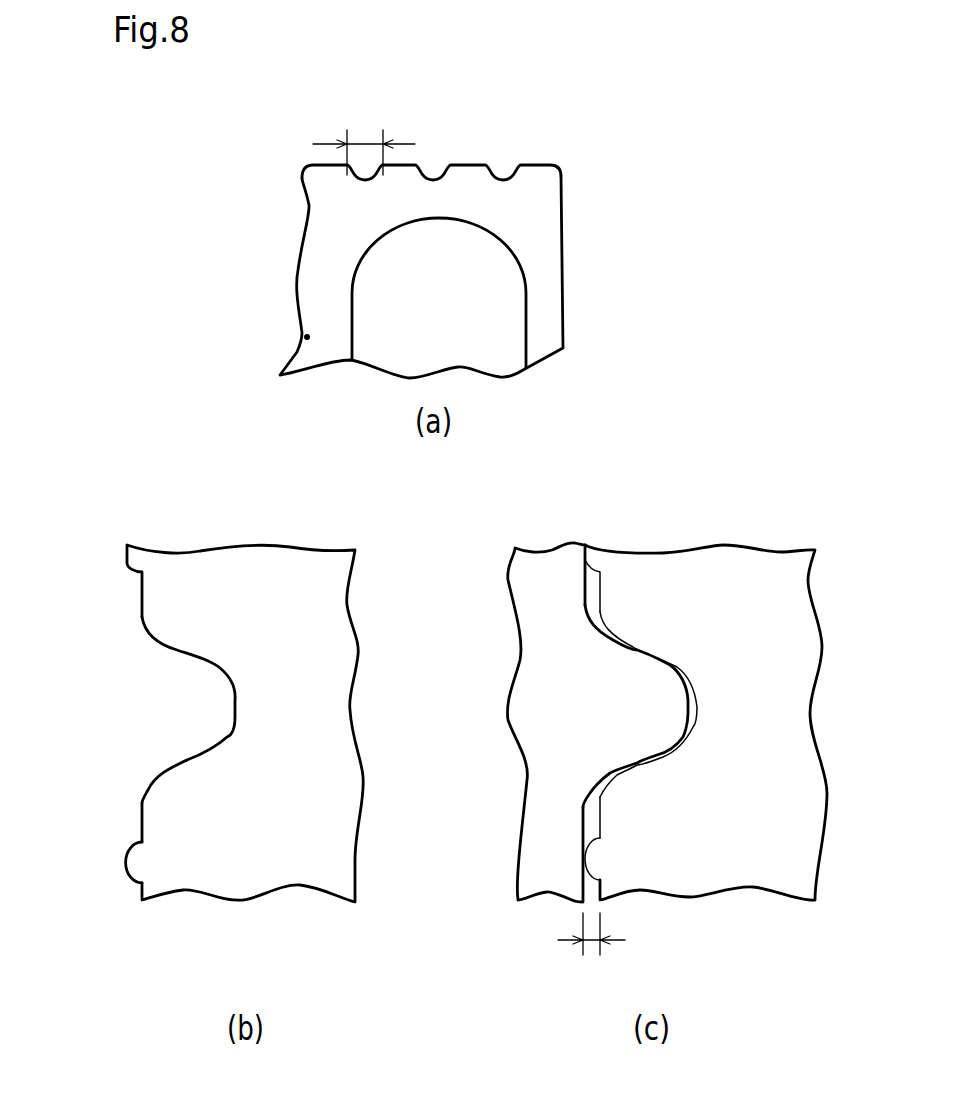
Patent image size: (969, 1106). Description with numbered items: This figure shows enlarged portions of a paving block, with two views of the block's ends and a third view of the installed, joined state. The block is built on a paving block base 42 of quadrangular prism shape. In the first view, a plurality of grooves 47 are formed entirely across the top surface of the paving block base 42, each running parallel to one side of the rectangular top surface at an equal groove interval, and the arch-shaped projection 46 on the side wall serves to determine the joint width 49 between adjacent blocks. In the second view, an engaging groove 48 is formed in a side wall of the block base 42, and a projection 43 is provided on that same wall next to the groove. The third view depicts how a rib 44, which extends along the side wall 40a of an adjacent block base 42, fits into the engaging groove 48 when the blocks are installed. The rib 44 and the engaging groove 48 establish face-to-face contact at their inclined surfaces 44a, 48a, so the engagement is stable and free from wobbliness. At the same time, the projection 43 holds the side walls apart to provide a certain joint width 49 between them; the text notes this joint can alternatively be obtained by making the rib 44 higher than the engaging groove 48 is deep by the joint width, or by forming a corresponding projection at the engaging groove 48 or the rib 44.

The paving block base 42 is at (540, 223).
The rib 44 is at (670, 697).
The inclined surface of the rib 44a is at (630, 661).
The projection 46 is at (486, 310).
The groove 47 is at (503, 178).
The engaging groove 48 is at (225, 710).
The inclined surface of the engaging groove 48a is at (628, 644).
The joint width 49 is at (363, 144).
The side wall 40a is at (142, 822).
The projection 43 is at (130, 870).